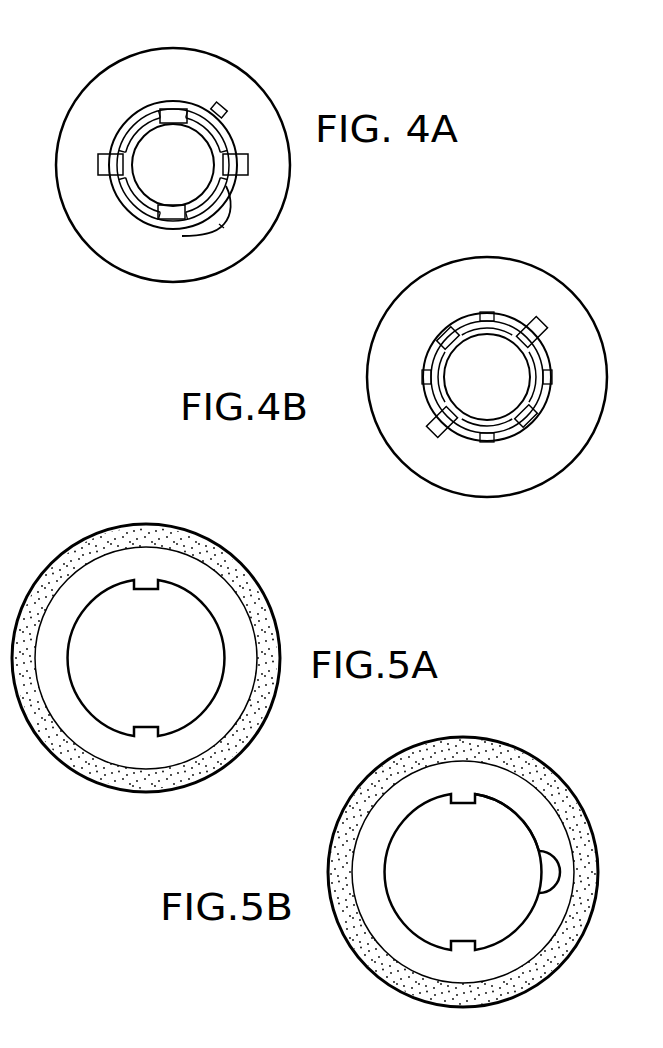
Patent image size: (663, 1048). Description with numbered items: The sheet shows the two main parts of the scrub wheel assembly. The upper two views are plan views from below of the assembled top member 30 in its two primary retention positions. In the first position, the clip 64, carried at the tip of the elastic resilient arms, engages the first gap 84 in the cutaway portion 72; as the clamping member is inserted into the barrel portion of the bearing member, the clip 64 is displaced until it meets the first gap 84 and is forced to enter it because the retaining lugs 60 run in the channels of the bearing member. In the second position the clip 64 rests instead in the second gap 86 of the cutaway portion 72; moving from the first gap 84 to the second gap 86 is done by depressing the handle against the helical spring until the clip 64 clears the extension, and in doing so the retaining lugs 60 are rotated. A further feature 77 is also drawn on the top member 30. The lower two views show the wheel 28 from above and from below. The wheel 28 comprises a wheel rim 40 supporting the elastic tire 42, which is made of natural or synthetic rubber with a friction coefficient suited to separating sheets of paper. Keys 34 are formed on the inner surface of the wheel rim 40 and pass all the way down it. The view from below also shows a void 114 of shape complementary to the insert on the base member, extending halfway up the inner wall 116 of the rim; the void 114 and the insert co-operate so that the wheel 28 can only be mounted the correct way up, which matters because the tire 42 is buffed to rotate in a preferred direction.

In FIG. 5A, the wheel 28 is at (328, 632).
In FIG. 4A, the top member 30 is at (345, 233).
In FIG. 4B, the top member 30 is at (350, 420).
In FIG. 5A, the keys 34 is at (147, 589).
In FIG. 5B, the keys 34 is at (460, 805).
In FIG. 5A, the wheel rim 40 is at (183, 567).
In FIG. 5B, the wheel rim 40 is at (503, 793).
In FIG. 5A, the elastic tire 42 is at (228, 568).
In FIG. 5B, the elastic tire 42 is at (343, 832).
In FIG. 4A, the retaining lugs 60 is at (98, 164).
In FIG. 4B, the retaining lugs 60 is at (540, 331).
In FIG. 4A, the clip 64 is at (176, 123).
In FIG. 4B, the clip 64 is at (452, 339).
In FIG. 4B, the cutaway portion 72 is at (527, 323).
In FIG. 4A, the lug 77 is at (215, 220).
In FIG. 4A, the first gap 84 is at (176, 110).
In FIG. 4B, the second gap 86 is at (443, 336).
In FIG. 5B, the void 114 is at (550, 875).
In FIG. 5B, the inner wall 116 is at (512, 813).